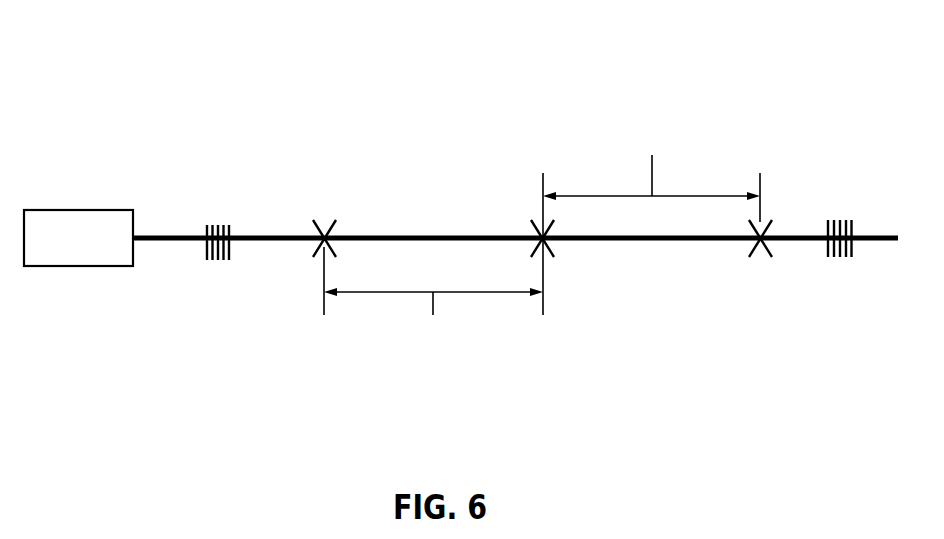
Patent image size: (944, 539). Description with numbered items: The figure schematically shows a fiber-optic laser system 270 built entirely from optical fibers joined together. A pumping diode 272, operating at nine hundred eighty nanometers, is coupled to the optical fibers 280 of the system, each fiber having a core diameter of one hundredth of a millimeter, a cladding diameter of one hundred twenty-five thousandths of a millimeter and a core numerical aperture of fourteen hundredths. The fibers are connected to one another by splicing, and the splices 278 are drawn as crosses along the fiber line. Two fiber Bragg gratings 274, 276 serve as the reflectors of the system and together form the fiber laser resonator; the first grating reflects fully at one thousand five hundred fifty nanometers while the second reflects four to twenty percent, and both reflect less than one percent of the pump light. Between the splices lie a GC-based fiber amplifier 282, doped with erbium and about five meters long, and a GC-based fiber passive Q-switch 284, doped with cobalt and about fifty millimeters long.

The fiber-optic laser system 270 is at (243, 91).
The pumping diode 272 is at (102, 267).
The fiber Bragg grating 274 is at (216, 223).
The fiber Bragg grating 276 is at (840, 258).
The splices 278 is at (324, 216).
The optical fiber 280 is at (257, 243).
The GC-based fiber amplifier 282 is at (433, 375).
The GC-based fiber passive Q-switch 284 is at (652, 98).